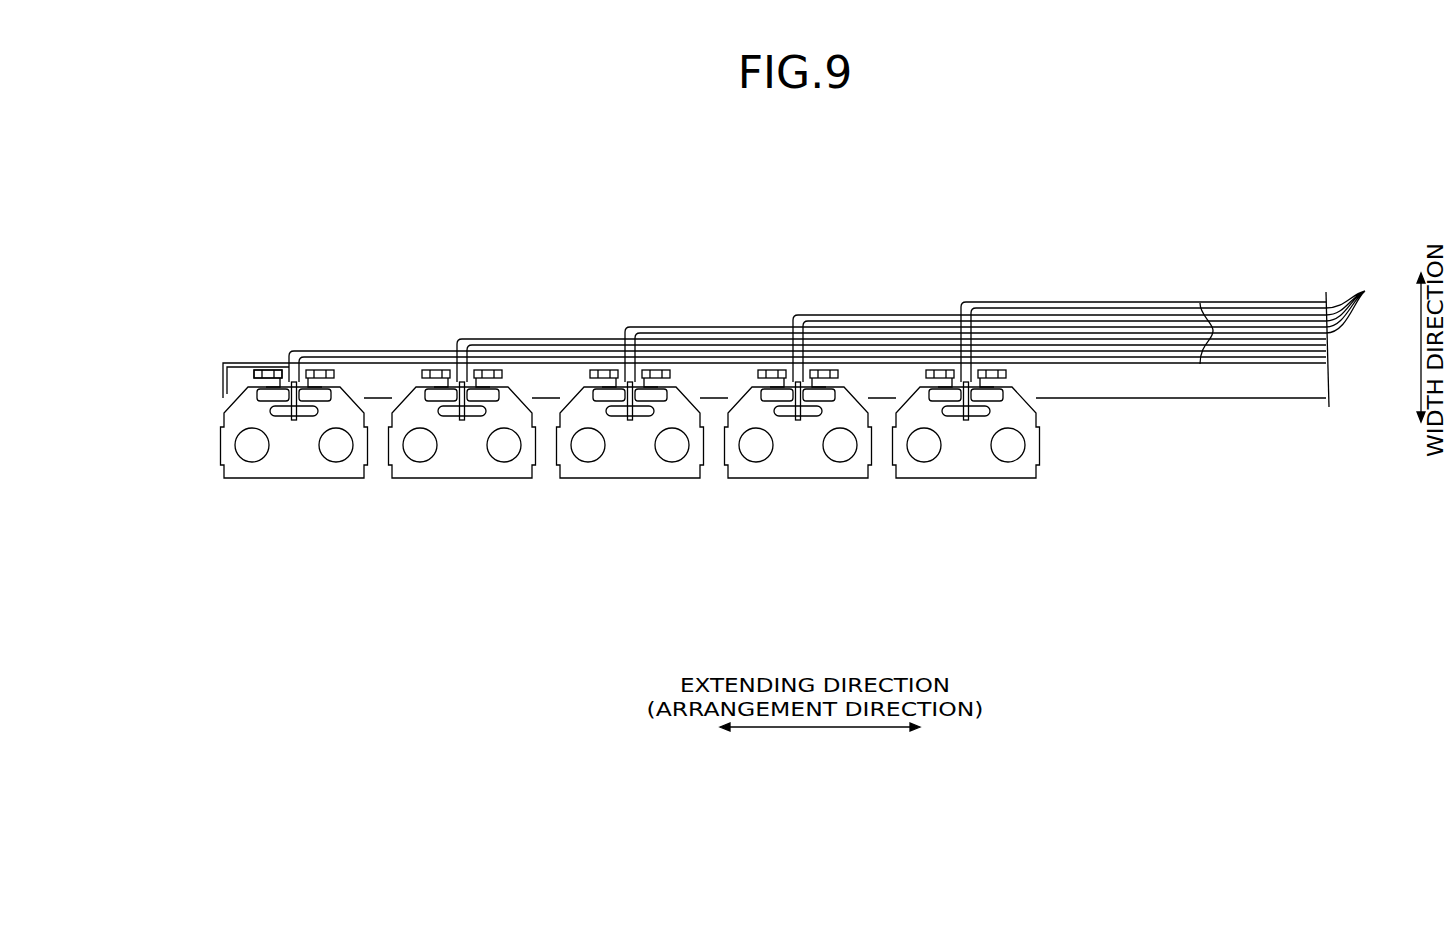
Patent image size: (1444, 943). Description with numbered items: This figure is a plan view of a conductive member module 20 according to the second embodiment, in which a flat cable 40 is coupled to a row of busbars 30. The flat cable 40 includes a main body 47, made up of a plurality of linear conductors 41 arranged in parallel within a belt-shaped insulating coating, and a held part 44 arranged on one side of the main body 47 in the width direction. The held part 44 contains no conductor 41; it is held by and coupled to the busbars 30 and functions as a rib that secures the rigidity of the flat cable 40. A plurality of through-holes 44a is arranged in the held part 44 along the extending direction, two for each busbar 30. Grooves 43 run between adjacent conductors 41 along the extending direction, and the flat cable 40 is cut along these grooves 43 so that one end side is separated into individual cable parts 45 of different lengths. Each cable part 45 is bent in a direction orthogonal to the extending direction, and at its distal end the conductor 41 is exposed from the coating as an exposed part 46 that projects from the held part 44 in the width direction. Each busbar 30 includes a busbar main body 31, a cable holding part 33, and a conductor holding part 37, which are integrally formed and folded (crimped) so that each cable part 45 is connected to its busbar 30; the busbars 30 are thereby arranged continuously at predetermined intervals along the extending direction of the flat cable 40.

The wiring module 20 is at (417, 190).
The busbar 30 is at (160, 450).
The busbar main body 31 is at (243, 482).
The cable holding part 33 is at (258, 388).
The conductor holding part 37 is at (279, 399).
The flat cable 40 is at (1149, 277).
The conductor 41 is at (292, 432).
The groove 43 is at (1365, 291).
The held part 44 is at (1337, 384).
The through-hole 44a is at (329, 360).
The cable part 45 is at (317, 401).
The exposed part 46 is at (297, 422).
The main body 47 is at (1200, 303).